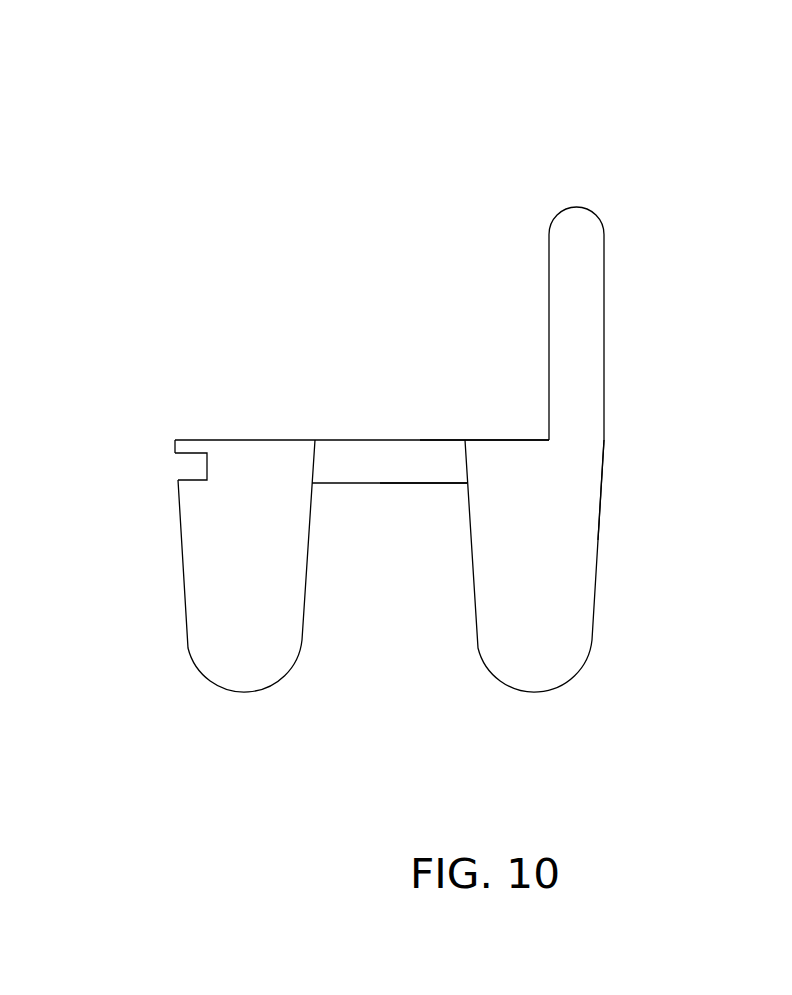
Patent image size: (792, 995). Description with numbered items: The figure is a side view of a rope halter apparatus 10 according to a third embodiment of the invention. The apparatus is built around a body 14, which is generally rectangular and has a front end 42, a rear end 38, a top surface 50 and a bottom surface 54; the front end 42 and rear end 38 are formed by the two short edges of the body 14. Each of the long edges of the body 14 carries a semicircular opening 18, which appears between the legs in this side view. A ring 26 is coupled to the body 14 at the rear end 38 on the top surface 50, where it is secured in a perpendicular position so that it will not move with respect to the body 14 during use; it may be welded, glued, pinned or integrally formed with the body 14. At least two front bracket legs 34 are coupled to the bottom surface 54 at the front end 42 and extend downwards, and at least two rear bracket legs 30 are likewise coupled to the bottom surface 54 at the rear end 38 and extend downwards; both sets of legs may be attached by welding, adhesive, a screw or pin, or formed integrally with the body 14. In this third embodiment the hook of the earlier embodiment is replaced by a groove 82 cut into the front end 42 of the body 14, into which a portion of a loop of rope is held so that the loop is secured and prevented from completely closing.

The rope halter apparatus 10 is at (443, 157).
The body 14 is at (303, 440).
The semicircular opening 18 is at (354, 470).
The ring 26 is at (578, 270).
The rear bracket legs 30 is at (580, 558).
The front bracket legs 34 is at (215, 652).
The rear end 38 is at (604, 444).
The front end 42 is at (173, 443).
The top surface 50 is at (455, 440).
The bottom surface 54 is at (427, 483).
The groove 82 is at (200, 458).